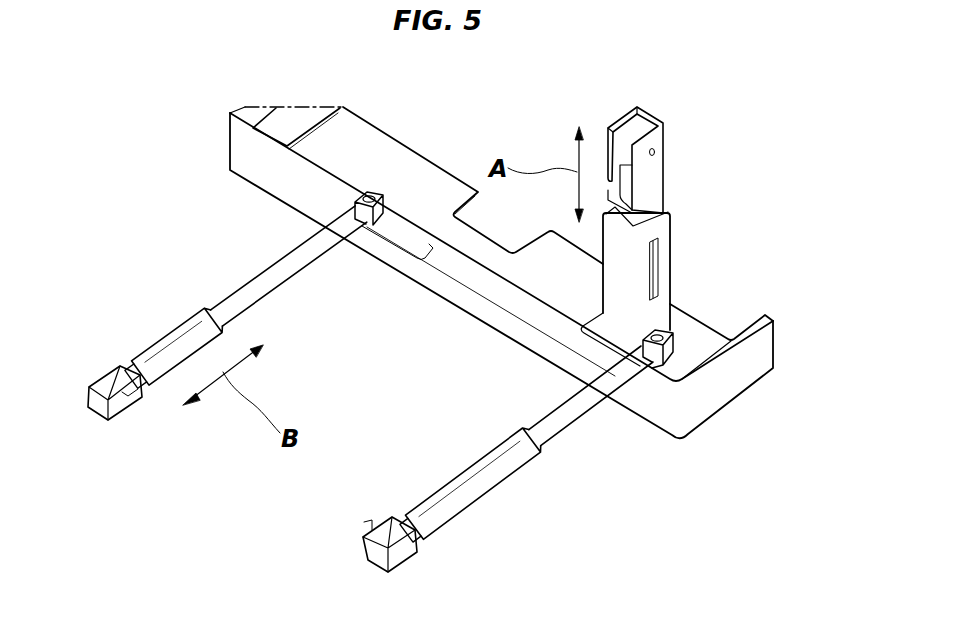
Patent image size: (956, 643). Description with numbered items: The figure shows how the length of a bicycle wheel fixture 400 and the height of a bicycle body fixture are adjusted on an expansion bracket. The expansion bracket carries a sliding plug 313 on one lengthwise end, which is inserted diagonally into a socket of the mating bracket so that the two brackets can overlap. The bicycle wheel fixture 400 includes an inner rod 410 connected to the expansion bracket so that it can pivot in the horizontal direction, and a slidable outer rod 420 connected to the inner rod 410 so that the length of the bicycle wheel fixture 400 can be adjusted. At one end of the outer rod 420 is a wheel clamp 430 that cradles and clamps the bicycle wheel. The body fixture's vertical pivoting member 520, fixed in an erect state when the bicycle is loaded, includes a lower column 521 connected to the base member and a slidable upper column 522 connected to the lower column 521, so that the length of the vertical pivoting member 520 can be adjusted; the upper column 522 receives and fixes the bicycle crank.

The sliding plug 313 is at (417, 180).
The bicycle wheel fixture 400 is at (37, 277).
The inner rod 410 is at (265, 282).
The outer rod 420 is at (180, 337).
The wheel clamp 430 is at (112, 380).
The vertical pivoting member 520 is at (790, 133).
The lower column 521 is at (665, 259).
The upper column 522 is at (658, 168).